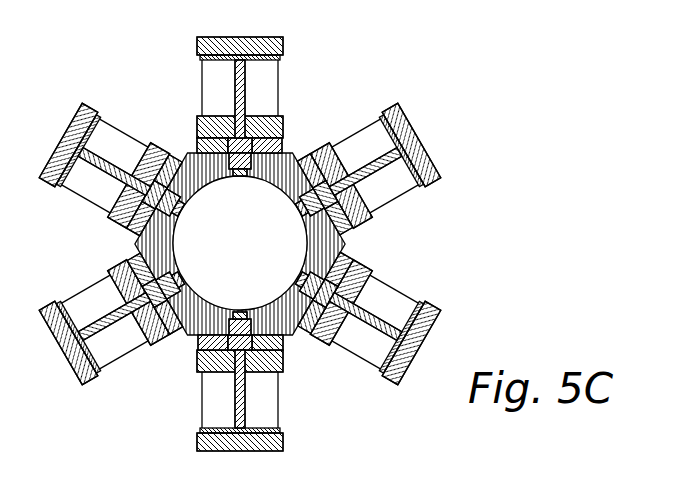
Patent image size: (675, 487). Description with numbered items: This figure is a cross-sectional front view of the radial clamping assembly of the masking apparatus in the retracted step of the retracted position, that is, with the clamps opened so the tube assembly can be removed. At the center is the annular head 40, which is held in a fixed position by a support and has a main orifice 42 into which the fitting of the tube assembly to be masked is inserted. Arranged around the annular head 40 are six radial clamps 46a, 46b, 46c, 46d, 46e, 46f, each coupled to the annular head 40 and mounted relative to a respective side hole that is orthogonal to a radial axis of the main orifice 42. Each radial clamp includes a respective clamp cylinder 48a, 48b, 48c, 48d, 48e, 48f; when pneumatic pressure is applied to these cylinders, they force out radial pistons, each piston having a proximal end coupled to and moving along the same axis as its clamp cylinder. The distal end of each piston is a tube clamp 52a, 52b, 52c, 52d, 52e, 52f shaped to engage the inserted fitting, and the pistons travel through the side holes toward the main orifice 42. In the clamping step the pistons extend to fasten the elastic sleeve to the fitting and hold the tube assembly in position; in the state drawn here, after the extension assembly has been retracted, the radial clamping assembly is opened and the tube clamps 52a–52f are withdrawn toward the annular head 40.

The annular head 40 is at (347, 246).
The main orifice 42 is at (287, 152).
The radial clamp 46a is at (428, 138).
The radial clamp 46b is at (430, 307).
The radial clamp 46c is at (284, 447).
The radial clamp 46d is at (68, 372).
The radial clamp 46e is at (91, 108).
The radial clamp 46f is at (266, 37).
The clamp cylinder 48a is at (385, 163).
The clamp cylinder 48b is at (374, 326).
The clamp cylinder 48c is at (246, 400).
The clamp cylinder 48d is at (112, 326).
The clamp cylinder 48e is at (100, 172).
The clamp cylinder 48f is at (246, 83).
The tube clamp 52a is at (301, 210).
The tube clamp 52b is at (301, 276).
The tube clamp 52c is at (241, 311).
The tube clamp 52d is at (185, 276).
The tube clamp 52e is at (182, 210).
The tube clamp 52f is at (239, 177).